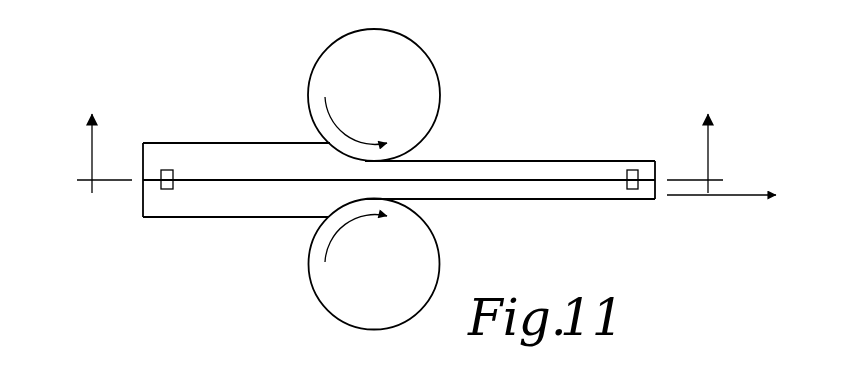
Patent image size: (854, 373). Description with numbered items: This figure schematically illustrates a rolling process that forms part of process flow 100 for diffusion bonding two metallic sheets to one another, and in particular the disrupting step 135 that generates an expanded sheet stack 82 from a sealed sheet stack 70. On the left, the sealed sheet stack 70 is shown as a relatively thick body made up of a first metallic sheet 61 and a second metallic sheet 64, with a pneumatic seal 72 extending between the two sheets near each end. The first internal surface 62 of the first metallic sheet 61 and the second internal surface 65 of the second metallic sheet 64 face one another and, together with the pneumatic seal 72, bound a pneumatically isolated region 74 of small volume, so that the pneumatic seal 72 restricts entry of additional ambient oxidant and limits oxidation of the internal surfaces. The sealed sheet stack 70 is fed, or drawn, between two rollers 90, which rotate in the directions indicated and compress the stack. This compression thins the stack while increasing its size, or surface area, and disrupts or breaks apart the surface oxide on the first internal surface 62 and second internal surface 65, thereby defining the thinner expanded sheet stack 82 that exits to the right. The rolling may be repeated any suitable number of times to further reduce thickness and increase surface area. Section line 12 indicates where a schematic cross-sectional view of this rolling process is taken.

The section line 12- 12 is at (399, 154).
The first metallic sheet 61 is at (184, 140).
The first internal surface 62 is at (303, 181).
The second metallic sheet 64 is at (214, 220).
The second internal surface 65 is at (445, 180).
The sealed sheet stack 70 is at (237, 195).
The pneumatic seal 72 is at (165, 194).
The pneumatically isolated region 74 is at (555, 176).
The expanded sheet stack 82 is at (515, 203).
The rollers 90 is at (313, 68).
The process flow 100 is at (774, 70).
The disrupting step 135 is at (602, 169).